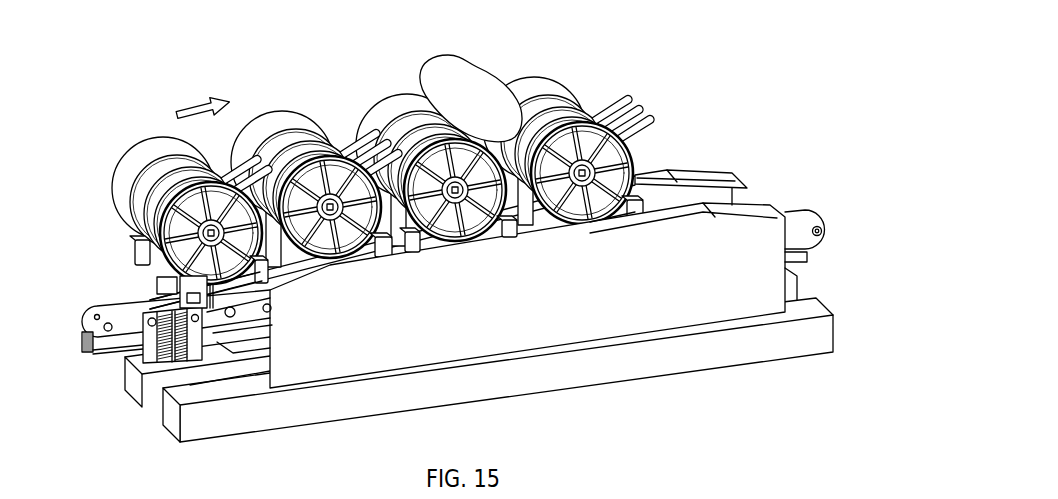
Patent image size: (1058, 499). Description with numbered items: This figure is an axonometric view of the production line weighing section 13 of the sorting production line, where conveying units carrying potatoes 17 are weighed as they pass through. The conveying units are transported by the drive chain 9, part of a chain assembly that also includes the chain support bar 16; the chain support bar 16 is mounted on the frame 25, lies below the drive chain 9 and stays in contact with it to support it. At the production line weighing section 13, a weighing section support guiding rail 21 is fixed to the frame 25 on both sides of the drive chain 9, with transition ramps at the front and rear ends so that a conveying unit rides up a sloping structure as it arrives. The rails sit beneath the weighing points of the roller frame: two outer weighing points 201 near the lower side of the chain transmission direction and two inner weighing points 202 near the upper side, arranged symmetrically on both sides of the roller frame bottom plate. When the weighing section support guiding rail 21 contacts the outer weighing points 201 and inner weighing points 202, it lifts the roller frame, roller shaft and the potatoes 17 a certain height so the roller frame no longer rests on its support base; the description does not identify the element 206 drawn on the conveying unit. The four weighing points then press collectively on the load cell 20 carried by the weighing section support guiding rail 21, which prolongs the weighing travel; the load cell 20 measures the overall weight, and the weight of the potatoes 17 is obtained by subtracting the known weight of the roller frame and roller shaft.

The drive chain 9 is at (122, 321).
The production line weighing section 13 is at (786, 122).
The chain support bar 16 is at (98, 346).
The potatoes 17 is at (474, 81).
The load cell 20 is at (554, 240).
The weighing section support guiding rail 21 is at (657, 183).
The frame 25 is at (639, 364).
The outer weighing points 201 is at (509, 238).
The inner weighing points 202 is at (419, 253).
The tubes 206 is at (619, 97).